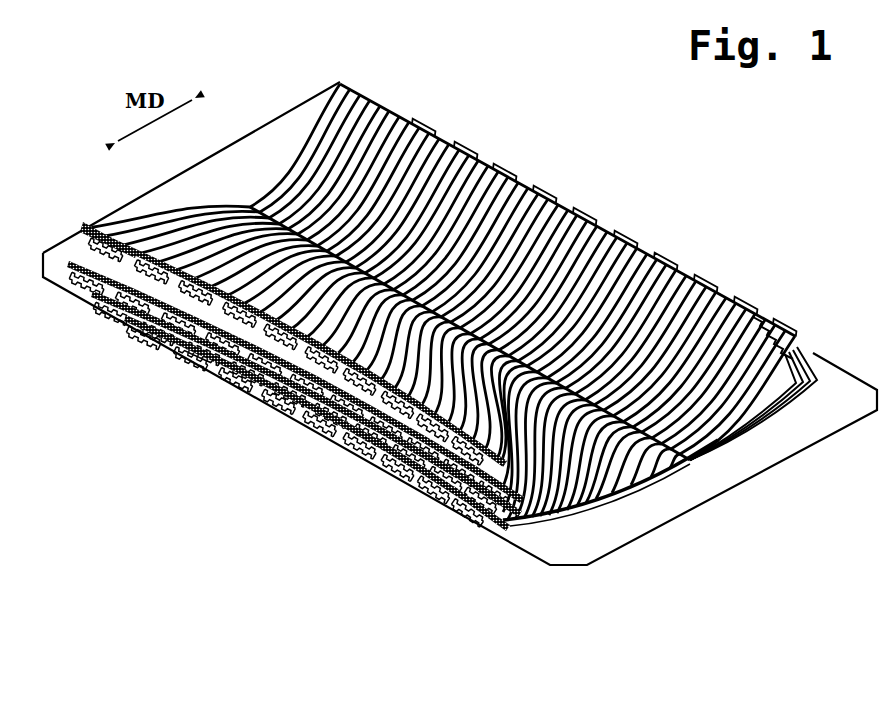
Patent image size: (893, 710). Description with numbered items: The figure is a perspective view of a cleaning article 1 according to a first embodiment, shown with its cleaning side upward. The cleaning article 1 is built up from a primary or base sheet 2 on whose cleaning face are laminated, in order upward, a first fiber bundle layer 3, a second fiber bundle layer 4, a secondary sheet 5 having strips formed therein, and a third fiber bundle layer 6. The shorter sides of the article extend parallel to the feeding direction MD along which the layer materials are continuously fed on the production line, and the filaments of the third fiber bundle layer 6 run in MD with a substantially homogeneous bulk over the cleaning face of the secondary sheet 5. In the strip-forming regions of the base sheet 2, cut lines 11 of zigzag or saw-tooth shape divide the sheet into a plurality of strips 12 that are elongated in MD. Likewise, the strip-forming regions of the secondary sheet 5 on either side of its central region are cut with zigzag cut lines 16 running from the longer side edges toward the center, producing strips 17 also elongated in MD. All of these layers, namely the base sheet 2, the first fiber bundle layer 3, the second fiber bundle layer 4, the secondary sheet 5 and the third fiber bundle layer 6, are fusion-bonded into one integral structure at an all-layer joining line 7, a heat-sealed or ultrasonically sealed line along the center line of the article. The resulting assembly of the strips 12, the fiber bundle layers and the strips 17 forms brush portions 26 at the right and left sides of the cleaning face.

The cleaning article 1 is at (547, 582).
The base sheet 2 is at (590, 543).
The first fiber bundle layer 3 is at (417, 473).
The second fiber bundle layer 4 is at (497, 530).
The secondary sheet 5 is at (600, 503).
The third fiber bundle layer 6 is at (330, 343).
The all-layer joining line 7 is at (690, 468).
The cut lines 11 is at (133, 318).
The strips 12 is at (217, 377).
The cut lines 16 is at (395, 452).
The strips 17 is at (100, 290).
The brush portions 26 is at (630, 214).